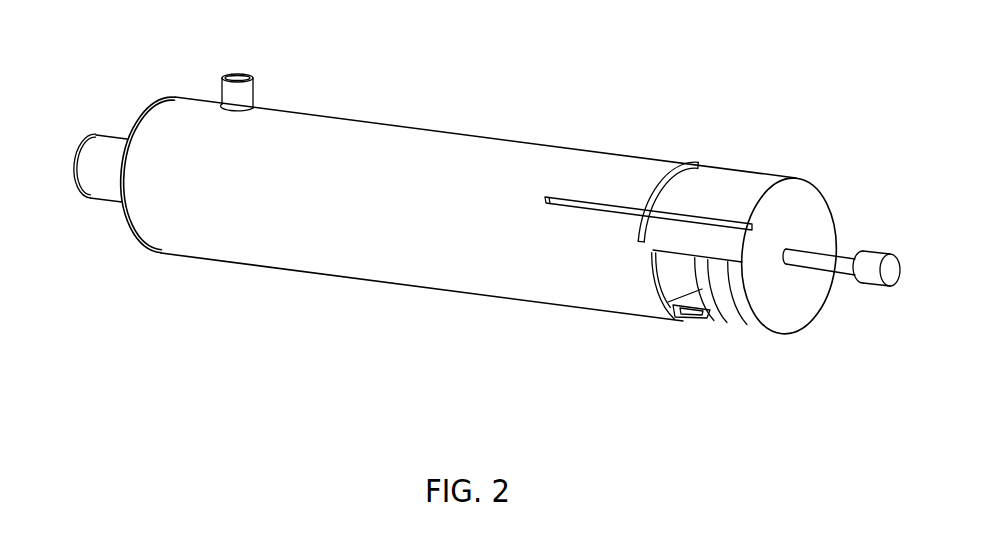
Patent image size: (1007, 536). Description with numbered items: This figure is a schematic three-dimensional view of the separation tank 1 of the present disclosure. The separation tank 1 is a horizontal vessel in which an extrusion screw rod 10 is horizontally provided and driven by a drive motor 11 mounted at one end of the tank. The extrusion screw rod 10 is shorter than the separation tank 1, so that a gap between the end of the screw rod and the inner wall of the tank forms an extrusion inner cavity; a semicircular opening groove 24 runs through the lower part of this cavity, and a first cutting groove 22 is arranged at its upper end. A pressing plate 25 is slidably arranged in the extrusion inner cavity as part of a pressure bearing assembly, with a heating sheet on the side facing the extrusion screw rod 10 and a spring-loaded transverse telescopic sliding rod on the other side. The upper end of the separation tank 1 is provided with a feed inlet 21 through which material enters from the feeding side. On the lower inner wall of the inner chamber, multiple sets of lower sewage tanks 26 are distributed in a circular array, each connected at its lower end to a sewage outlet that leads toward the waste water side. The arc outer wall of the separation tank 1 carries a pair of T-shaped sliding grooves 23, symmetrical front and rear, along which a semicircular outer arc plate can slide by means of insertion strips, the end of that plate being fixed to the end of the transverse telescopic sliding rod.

The separation tank 1 is at (429, 152).
The extrusion screw rod 10 is at (683, 272).
The drive motor 11 is at (98, 162).
The feed inlet 21 is at (245, 74).
The first cutting groove 22 is at (673, 178).
The T-shaped sliding grooves 23 is at (593, 205).
The semicircular opening groove 24 is at (658, 290).
The pressing plate 25 is at (748, 320).
The lower sewage tanks 26 is at (699, 320).